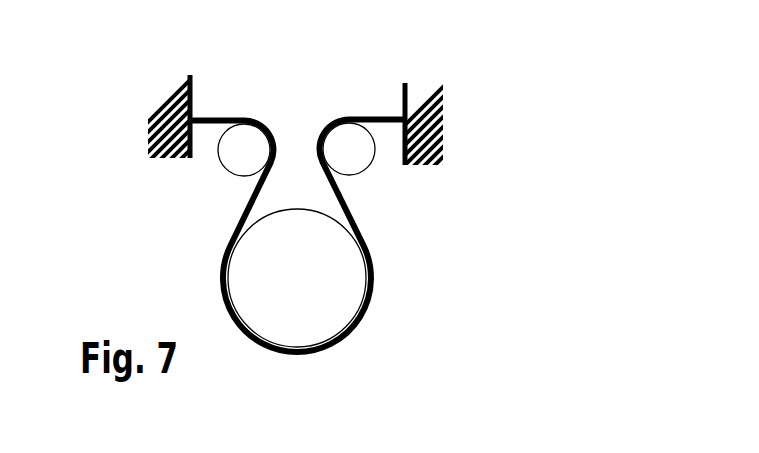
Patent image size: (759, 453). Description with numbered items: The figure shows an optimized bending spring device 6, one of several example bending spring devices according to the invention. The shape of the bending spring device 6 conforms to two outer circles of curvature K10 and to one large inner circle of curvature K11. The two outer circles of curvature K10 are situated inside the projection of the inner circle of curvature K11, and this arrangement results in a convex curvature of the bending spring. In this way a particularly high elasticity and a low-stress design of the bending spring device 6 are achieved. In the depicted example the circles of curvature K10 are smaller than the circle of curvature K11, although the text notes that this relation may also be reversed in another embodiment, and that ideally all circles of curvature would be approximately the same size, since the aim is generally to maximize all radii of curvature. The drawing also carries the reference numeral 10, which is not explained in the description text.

The bending spring device 6 is at (381, 239).
The belt 10 is at (355, 333).
The outer circle of curvature K10 is at (238, 171).
The inner circle of curvature K11 is at (297, 207).